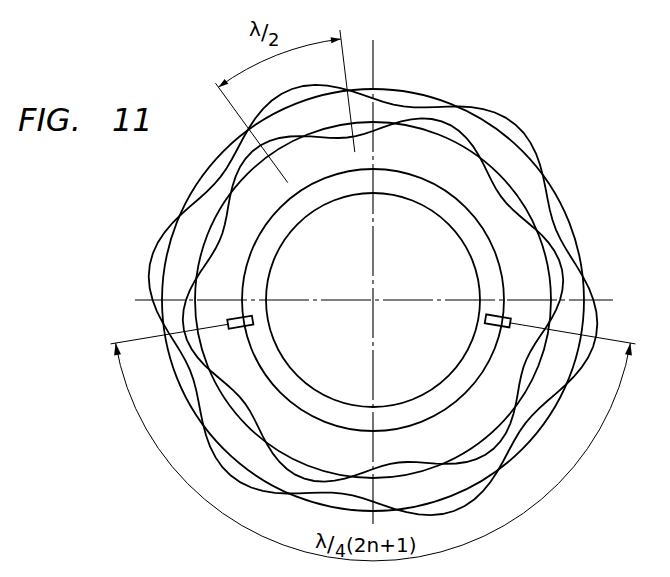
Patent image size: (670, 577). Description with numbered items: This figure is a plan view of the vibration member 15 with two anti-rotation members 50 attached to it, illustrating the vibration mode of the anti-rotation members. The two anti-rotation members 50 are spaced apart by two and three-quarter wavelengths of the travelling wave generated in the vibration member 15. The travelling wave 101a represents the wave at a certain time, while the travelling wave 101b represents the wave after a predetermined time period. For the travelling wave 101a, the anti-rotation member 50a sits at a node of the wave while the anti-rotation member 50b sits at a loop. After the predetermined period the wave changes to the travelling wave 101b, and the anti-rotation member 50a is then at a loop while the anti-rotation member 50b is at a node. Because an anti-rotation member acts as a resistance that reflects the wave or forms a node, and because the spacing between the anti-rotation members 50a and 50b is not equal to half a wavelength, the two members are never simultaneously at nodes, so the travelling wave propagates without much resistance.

The vibration member 15 is at (381, 365).
The anti-rotation member 50 is at (384, 343).
The anti-rotation member 50a is at (554, 272).
The anti-rotation member 50b is at (231, 341).
The travelling wave 101a is at (373, 271).
The travelling wave 101b is at (373, 300).